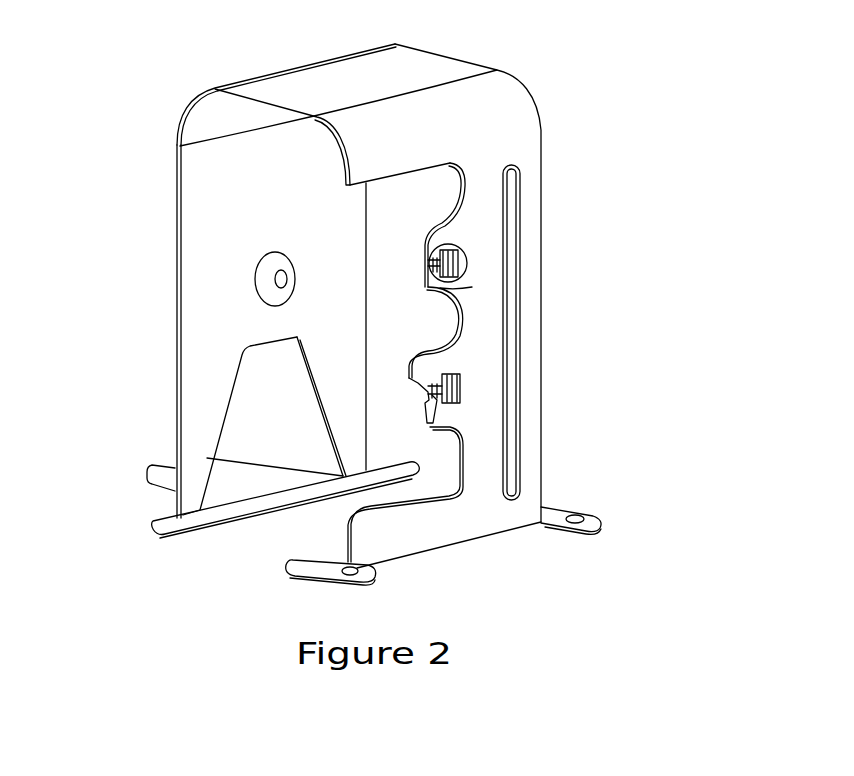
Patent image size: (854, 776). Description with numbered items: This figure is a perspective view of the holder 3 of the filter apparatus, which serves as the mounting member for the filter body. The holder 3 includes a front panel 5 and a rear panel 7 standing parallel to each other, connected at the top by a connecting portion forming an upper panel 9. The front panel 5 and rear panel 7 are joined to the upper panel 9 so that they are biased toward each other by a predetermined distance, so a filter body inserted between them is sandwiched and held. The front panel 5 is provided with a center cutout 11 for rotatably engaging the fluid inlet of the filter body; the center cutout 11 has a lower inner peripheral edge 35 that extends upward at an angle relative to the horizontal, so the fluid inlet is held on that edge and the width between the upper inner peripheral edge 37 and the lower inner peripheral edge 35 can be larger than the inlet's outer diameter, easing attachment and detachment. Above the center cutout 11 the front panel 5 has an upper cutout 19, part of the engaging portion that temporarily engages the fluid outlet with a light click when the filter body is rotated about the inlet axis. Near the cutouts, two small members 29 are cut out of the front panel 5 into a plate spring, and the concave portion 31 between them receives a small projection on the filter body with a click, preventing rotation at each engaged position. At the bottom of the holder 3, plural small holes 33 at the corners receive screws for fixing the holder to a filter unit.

The holder 3 is at (506, 94).
The front panel 5 is at (542, 245).
The rear panel 7 is at (223, 221).
The upper panel 9 is at (378, 86).
The center cutout 11 is at (459, 323).
The upper cutout 19 is at (452, 168).
The small members 29 is at (436, 264).
The concave portion 31 is at (461, 248).
The small holes 33 is at (353, 566).
The lower inner peripheral edge 35 is at (437, 383).
The upper inner peripheral edge 37 is at (472, 287).